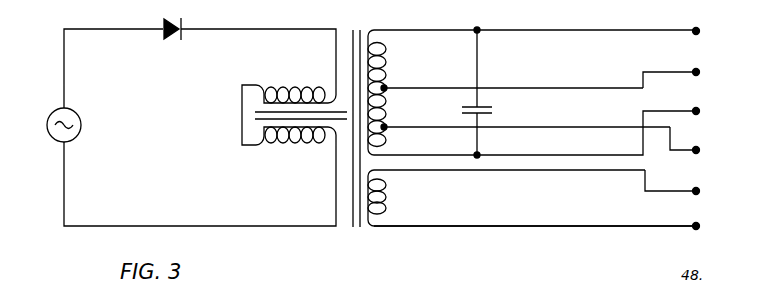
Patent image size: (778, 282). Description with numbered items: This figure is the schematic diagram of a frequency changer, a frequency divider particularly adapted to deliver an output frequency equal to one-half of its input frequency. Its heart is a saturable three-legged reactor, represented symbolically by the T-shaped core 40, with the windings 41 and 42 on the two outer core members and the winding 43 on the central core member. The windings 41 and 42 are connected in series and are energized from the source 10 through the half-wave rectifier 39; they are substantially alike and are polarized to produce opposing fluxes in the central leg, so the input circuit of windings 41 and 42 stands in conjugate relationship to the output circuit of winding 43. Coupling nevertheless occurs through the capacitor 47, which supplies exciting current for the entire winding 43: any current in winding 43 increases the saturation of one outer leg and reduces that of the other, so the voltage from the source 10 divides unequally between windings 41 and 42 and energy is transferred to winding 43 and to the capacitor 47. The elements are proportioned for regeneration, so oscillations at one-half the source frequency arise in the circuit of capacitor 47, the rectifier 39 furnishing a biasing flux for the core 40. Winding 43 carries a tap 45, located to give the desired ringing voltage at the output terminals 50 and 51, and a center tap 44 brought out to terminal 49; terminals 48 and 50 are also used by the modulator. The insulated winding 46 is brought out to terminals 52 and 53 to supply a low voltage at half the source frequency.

The source 10 is at (80, 128).
The half-wave rectifier 39 is at (181, 18).
The saturable three-legged reactor 40 is at (354, 30).
The winding 41 is at (287, 82).
The winding 42 is at (312, 151).
The winding 43 is at (374, 32).
The center tap 44 is at (384, 87).
The tap 45 is at (384, 127).
The insulated winding 46 is at (386, 210).
The capacitor 47 is at (497, 106).
The terminal 48 is at (699, 27).
The terminal 49 is at (700, 66).
The output terminal 50 is at (702, 106).
The output terminal 51 is at (702, 146).
The terminal 52 is at (703, 186).
The terminal 53 is at (706, 221).